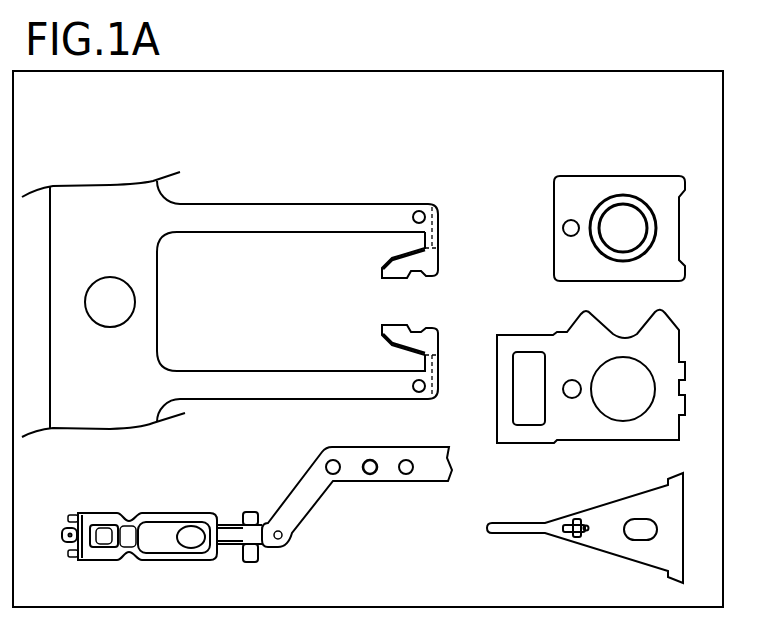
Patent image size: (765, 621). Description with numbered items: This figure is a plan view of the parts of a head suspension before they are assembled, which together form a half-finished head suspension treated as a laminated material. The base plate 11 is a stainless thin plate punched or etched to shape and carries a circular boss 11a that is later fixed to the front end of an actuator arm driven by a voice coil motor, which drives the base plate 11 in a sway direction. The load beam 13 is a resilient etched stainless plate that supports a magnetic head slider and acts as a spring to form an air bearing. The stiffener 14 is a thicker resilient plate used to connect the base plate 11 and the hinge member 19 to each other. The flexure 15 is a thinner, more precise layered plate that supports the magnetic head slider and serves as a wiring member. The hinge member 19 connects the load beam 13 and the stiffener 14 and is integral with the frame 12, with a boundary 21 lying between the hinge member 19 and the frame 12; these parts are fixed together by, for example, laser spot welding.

The base plate 11 is at (619, 191).
The circular boss 11a is at (600, 222).
The frame 12 is at (207, 204).
The load beam 13 is at (590, 508).
The stiffener 14 is at (518, 335).
The flexure 15 is at (357, 483).
The hinge member 19 is at (382, 272).
The boundary 21 is at (438, 210).